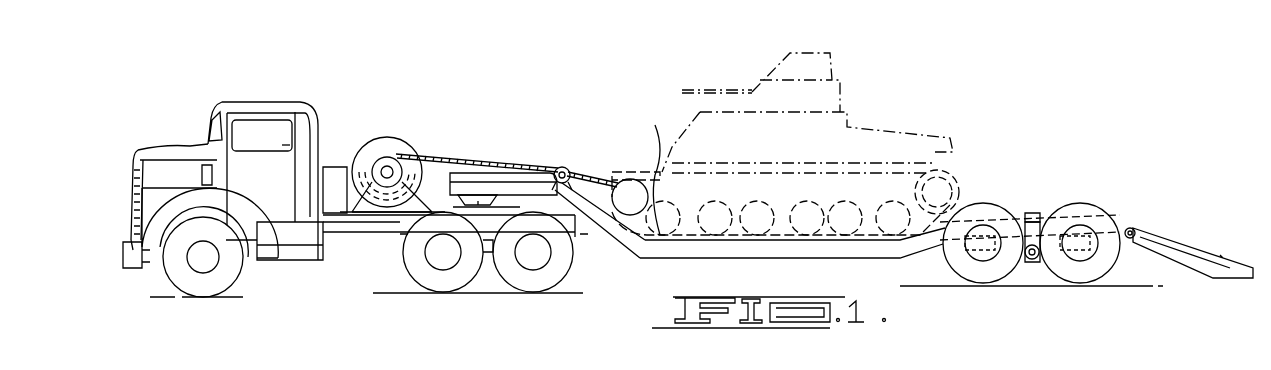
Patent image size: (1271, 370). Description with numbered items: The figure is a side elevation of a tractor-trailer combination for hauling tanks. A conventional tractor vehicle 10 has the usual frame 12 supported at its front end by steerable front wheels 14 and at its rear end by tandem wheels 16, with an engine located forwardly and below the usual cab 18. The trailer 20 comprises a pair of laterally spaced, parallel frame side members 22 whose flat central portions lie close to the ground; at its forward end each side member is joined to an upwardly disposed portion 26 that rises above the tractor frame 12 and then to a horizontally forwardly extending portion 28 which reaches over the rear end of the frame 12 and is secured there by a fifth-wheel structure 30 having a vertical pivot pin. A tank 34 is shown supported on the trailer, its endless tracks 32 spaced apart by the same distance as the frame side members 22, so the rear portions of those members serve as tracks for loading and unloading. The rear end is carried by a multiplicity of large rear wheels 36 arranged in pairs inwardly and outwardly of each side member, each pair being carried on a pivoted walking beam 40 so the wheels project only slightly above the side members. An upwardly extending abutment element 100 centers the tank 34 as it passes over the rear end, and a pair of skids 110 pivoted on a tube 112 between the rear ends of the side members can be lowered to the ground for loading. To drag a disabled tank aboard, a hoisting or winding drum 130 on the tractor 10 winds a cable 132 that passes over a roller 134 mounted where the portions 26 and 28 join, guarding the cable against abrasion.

The tractor vehicle 10 is at (370, 191).
The frame 12 is at (352, 233).
The steerable front wheels 14 is at (232, 278).
The tandem wheels 16 is at (533, 282).
The cab 18 is at (243, 102).
The trailer 20 is at (904, 243).
The frame side members 22 is at (817, 247).
The upwardly disposed portion 26 is at (620, 232).
The horizontally forwardly extending portion 28 is at (510, 177).
The fifth-wheel structure 30 is at (485, 207).
The endless tracks 32 is at (622, 180).
The tank 34 is at (646, 170).
The rear wheels 36 is at (1102, 278).
The walking beam 40 is at (1030, 263).
The abutment element 100 is at (1035, 215).
The skids 110 is at (1183, 245).
The tube 112 is at (1132, 240).
The hoisting or winding drum 130 is at (382, 139).
The cable 132 is at (433, 153).
The roller 134 is at (565, 168).